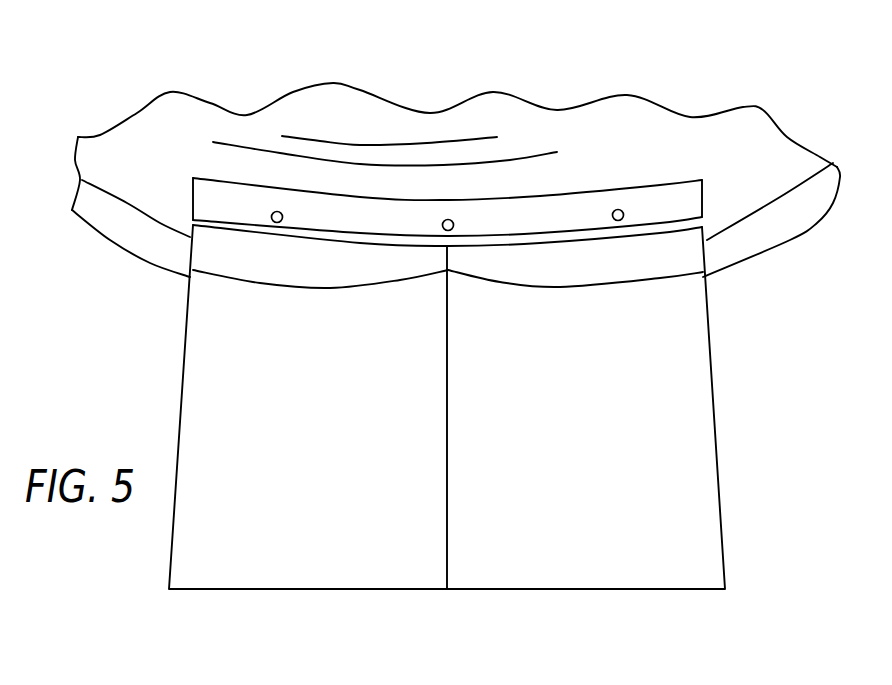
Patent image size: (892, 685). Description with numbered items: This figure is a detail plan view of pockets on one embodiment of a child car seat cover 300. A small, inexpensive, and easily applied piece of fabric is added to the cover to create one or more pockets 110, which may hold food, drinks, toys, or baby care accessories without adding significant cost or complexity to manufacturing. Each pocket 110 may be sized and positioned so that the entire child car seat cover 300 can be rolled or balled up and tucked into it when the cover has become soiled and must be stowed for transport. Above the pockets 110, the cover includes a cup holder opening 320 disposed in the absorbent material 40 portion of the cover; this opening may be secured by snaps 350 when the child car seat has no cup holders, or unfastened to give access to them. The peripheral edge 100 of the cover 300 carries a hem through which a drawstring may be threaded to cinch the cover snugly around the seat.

The absorbent material 40 is at (183, 133).
The child car seat cover 300 is at (742, 107).
The snaps 350 is at (618, 207).
The cup holder opening 320 is at (573, 233).
The peripheral edge 100 is at (787, 240).
The pocket 110 is at (382, 560).